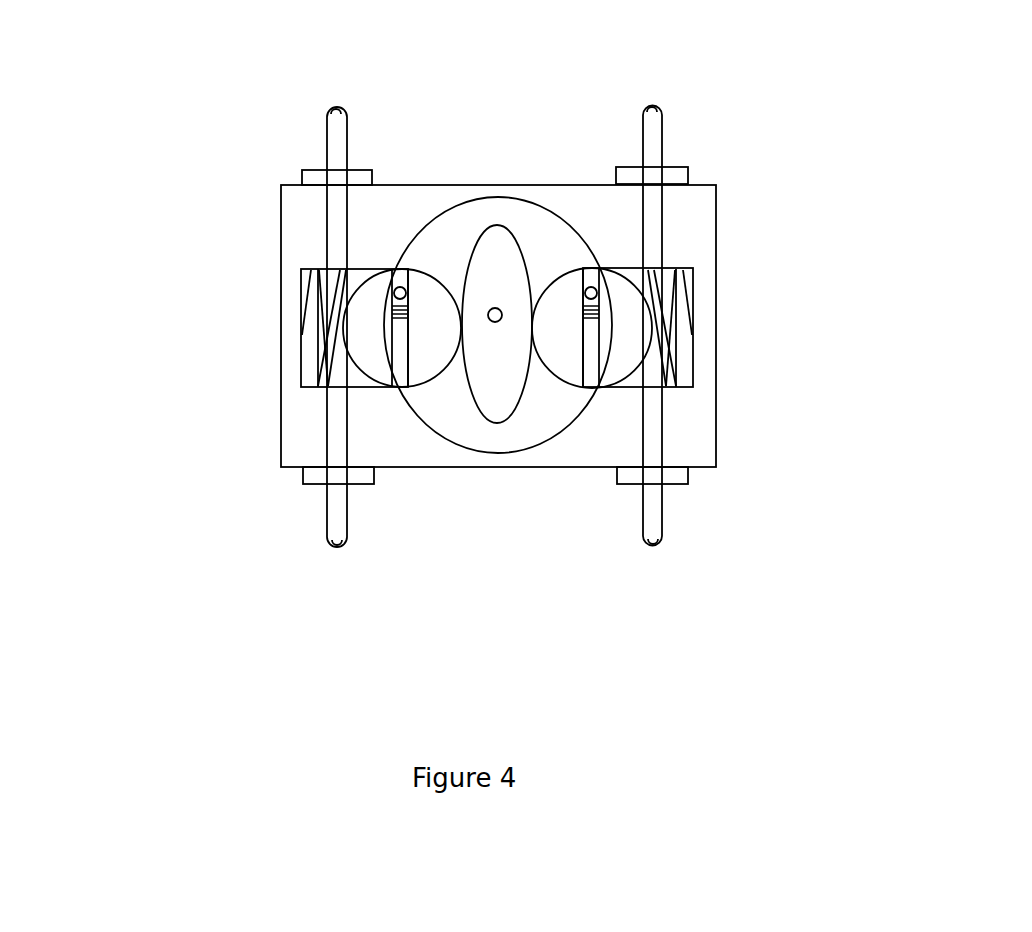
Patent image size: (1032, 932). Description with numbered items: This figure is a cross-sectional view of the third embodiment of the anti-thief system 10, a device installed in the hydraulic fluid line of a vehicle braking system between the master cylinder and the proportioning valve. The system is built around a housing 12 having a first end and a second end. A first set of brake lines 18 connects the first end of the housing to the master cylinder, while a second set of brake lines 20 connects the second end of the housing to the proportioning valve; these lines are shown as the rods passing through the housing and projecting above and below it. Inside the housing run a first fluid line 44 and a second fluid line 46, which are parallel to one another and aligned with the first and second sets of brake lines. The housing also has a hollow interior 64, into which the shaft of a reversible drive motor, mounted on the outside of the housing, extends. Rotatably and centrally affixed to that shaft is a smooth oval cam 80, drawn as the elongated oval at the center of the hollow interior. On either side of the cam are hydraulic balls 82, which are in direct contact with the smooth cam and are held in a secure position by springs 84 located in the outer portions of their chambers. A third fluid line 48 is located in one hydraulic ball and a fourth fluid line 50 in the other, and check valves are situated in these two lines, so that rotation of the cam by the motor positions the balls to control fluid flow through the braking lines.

The anti-thief system 10 is at (122, 69).
The housing 12 is at (702, 244).
The first set of brake lines 18 is at (652, 133).
The second set of brake lines 20 is at (657, 500).
The first fluid line 44 is at (337, 212).
The second fluid line 46 is at (648, 221).
The third fluid line 48 is at (398, 281).
The fourth fluid line 50 is at (592, 272).
The hollow interior 64 is at (526, 423).
The smooth oval cam 80 is at (500, 395).
The hydraulic balls 82 is at (362, 347).
The springs 84 is at (316, 313).